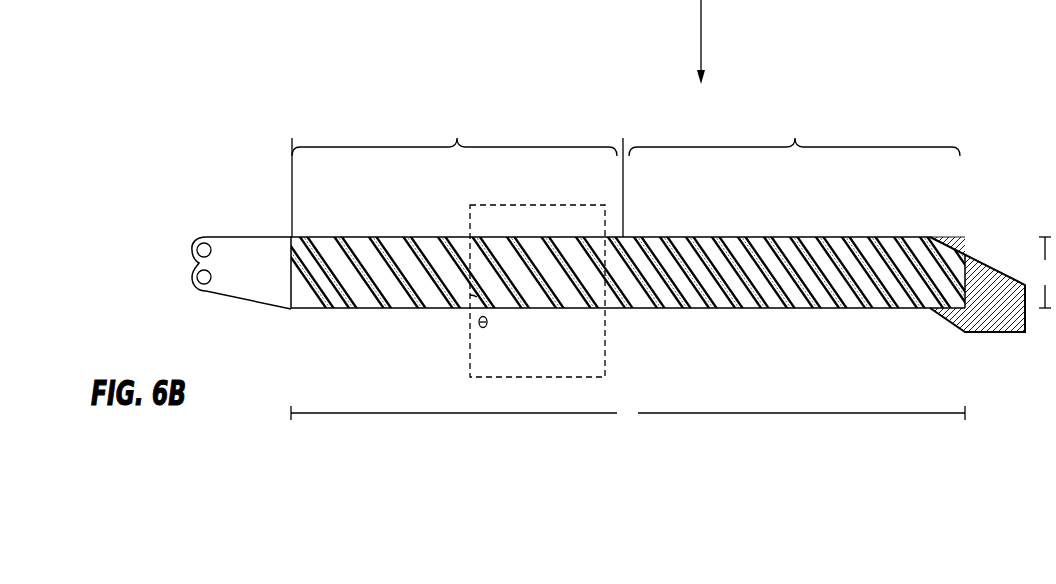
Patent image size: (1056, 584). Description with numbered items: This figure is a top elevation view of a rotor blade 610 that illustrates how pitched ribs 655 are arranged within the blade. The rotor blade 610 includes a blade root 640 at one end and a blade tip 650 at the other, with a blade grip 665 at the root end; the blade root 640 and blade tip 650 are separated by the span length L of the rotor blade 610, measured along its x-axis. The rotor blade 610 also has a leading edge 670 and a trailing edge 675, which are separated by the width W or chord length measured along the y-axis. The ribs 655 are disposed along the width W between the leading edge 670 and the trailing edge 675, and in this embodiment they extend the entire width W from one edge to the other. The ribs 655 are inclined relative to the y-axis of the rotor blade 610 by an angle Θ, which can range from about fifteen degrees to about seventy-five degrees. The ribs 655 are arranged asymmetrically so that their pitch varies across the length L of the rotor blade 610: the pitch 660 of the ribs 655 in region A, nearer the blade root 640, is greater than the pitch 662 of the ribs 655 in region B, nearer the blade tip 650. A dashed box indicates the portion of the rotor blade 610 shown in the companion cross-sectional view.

The rotor blade 610 is at (404, 80).
The blade root 640 is at (246, 237).
The blade tip 650 is at (986, 262).
The ribs 655 is at (419, 246).
The pitch 660 is at (359, 273).
The pitch 662 is at (812, 274).
The blade grip 665 is at (206, 284).
The leading edge 670 is at (873, 237).
The trailing edge 675 is at (903, 310).